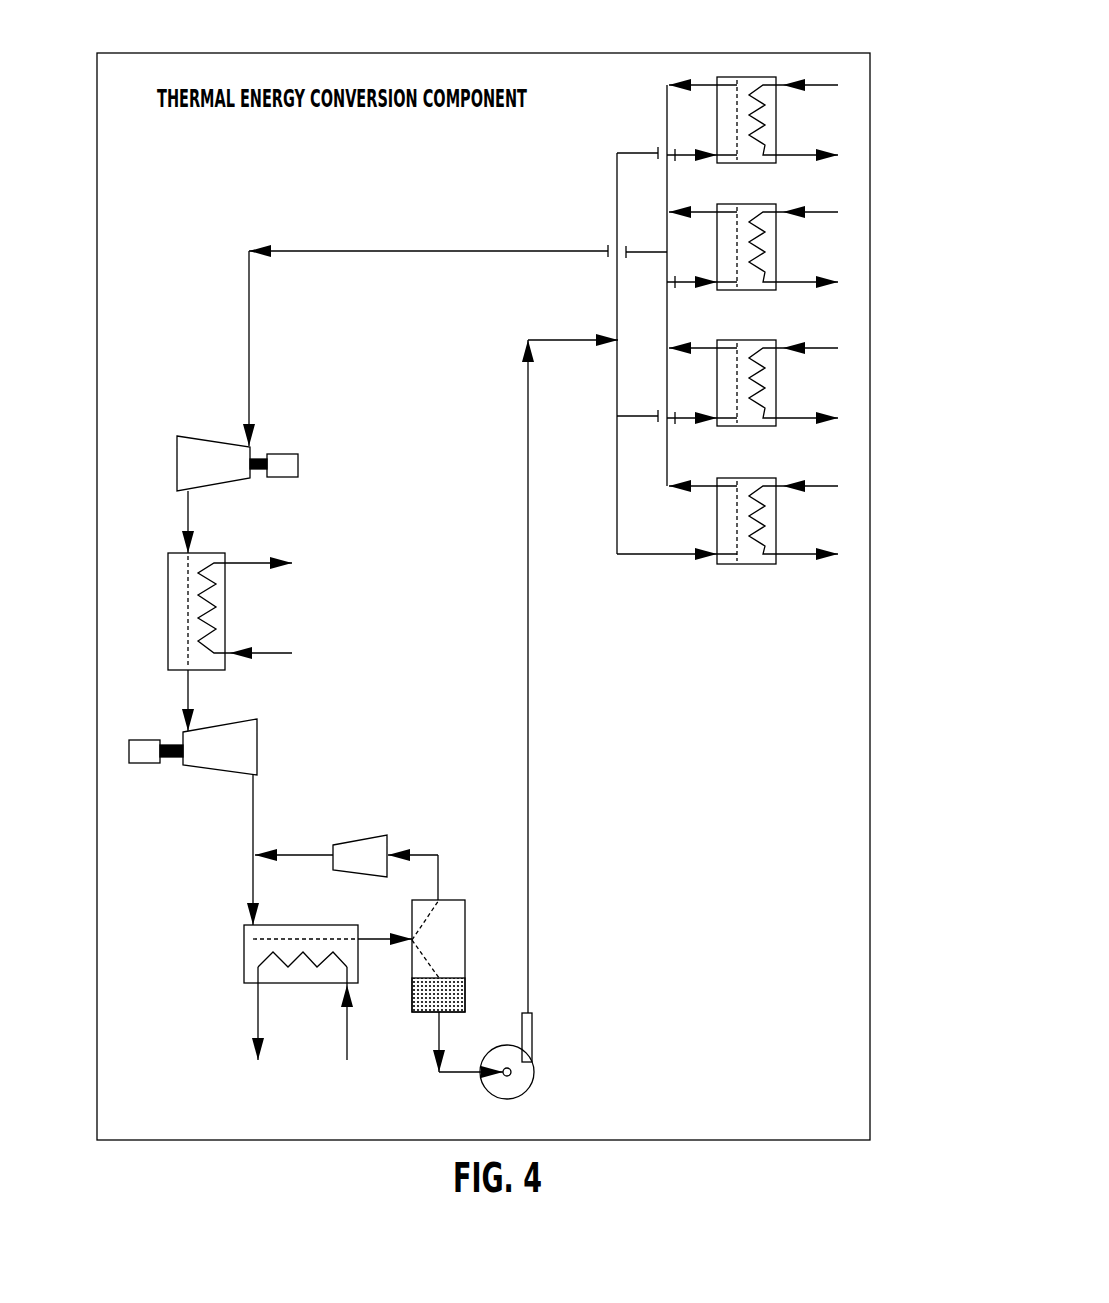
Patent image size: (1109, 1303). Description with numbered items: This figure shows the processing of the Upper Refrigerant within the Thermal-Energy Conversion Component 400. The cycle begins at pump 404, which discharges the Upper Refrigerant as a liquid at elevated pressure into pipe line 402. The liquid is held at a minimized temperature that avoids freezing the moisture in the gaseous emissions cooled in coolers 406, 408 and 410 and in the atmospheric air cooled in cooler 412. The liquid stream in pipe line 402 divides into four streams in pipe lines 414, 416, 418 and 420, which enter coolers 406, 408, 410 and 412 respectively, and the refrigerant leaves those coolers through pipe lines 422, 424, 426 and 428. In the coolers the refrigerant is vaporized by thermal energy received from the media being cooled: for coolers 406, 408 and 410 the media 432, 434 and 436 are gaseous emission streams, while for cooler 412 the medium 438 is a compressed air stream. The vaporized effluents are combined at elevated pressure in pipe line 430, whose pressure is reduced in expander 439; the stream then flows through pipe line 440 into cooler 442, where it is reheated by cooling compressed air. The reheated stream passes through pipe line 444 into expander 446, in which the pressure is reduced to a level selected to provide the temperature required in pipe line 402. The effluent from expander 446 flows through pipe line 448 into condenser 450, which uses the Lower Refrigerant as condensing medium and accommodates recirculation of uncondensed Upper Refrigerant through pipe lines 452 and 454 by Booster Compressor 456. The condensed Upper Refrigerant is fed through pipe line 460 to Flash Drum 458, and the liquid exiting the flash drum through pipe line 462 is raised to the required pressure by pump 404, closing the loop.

The Thermal-Energy Conversion Component 400 is at (820, 797).
The pipe line 402 is at (528, 890).
The pump 404 is at (520, 1062).
The cooler 406 is at (748, 83).
The cooler 408 is at (753, 210).
The cooler 410 is at (753, 343).
The cooler 412 is at (748, 483).
The pipe line 414 is at (645, 152).
The pipe line 416 is at (630, 287).
The pipe line 418 is at (643, 420).
The pipe line 420 is at (642, 555).
The pipe line 422 is at (705, 83).
The pipe line 424 is at (703, 210).
The pipe line 426 is at (702, 343).
The pipe line 428 is at (700, 483).
The pipe line 430 is at (430, 251).
The medium 432 is at (820, 140).
The medium 434 is at (828, 227).
The medium 436 is at (828, 358).
The medium 438 is at (828, 498).
The expander 439 is at (220, 450).
The pipe line 440 is at (185, 515).
The cooler 442 is at (198, 572).
The pipe line 444 is at (188, 682).
The expander 446 is at (247, 745).
The pipe line 448 is at (253, 832).
The condenser 450 is at (248, 970).
The pipe line 452 is at (430, 853).
The pipe line 454 is at (320, 855).
The Booster Compressor 456 is at (377, 863).
The Flash Drum 458 is at (448, 942).
The pipe line 460 is at (368, 942).
The pipe line 462 is at (439, 1033).